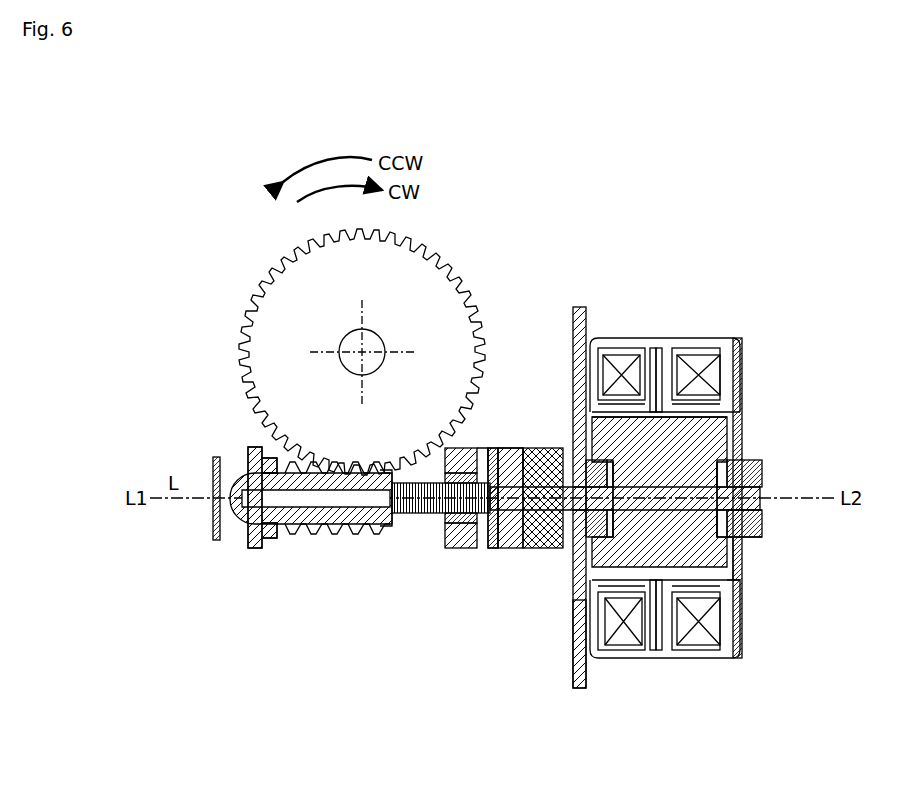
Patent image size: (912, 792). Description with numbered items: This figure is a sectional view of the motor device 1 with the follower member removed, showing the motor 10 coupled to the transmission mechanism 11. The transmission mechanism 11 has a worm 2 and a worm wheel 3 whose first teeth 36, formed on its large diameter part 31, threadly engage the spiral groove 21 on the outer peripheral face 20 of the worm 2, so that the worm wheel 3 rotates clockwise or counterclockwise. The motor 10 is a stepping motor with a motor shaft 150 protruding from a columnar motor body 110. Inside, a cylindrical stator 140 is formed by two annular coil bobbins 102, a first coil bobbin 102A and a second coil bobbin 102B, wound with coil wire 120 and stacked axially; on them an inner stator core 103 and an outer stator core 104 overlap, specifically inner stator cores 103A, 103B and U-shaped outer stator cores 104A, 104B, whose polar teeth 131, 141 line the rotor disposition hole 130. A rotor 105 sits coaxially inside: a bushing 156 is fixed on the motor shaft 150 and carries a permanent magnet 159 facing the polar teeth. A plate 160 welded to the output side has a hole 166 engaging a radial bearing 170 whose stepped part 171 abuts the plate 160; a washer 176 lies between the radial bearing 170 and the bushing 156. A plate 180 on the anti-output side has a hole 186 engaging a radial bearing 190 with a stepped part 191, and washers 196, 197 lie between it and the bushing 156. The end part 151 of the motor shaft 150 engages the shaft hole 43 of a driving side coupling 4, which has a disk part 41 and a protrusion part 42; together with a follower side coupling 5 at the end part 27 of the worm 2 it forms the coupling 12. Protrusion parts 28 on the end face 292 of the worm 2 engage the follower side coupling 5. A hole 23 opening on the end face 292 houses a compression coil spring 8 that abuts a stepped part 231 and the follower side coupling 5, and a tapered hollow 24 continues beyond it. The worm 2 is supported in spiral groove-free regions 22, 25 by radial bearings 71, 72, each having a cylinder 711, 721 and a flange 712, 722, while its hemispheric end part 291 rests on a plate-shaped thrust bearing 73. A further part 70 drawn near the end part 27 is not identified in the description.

The motor device 1 is at (682, 224).
The worm 2 is at (237, 462).
The worm wheel 3 is at (290, 344).
The driving side coupling 4 is at (543, 550).
The follower side coupling 5 is at (510, 550).
The compression coil spring 8 is at (383, 468).
The motor 10 is at (740, 328).
The transmission mechanism 11 is at (182, 330).
The coupling 12 is at (515, 723).
The outer peripheral face 20 is at (306, 455).
The spiral groove 21 is at (355, 532).
The spiral groove-free region 22 is at (412, 535).
The hole 23 is at (372, 532).
The hollow 24 is at (318, 532).
The spiral groove-free region 25 is at (238, 548).
The end part 27 is at (445, 535).
The protrusion parts 28 is at (461, 498).
The large diameter part 31 is at (452, 265).
The first teeth 36 is at (362, 352).
The disk part 41 is at (513, 455).
The protrusion part 42 is at (505, 455).
The shaft hole 43 is at (490, 455).
The holder 70 is at (480, 548).
The radial bearing 71 is at (430, 690).
The cylinder 711 is at (460, 540).
The flange 712 is at (478, 545).
The radial bearing 72 is at (300, 640).
The cylinder 721 is at (277, 540).
The flange 722 is at (260, 548).
The thrust bearing 73 is at (217, 540).
The coil bobbins 102 is at (690, 648).
The first coil bobbin 102A is at (622, 500).
The second coil bobbin 102B is at (698, 500).
The inner stator core 103 is at (665, 650).
The inner stator core 103A is at (653, 499).
The inner stator core 103B is at (659, 499).
The outer stator core 104 is at (740, 615).
The outer stator core 104A is at (621, 495).
The outer stator core 104B is at (696, 495).
The rotor 105 is at (730, 425).
The motor body 110 is at (743, 294).
The coil wire 120 is at (722, 635).
The rotor disposition hole 130 is at (687, 567).
The polar teeth 131 is at (551, 567).
The stator 140 is at (584, 650).
The polar teeth 141 is at (600, 570).
The motor shaft 150 is at (494, 455).
The end part 151 is at (493, 550).
The bushing 156 is at (728, 540).
The permanent magnet 159 is at (740, 590).
The plate 160 is at (573, 322).
The hole 166 is at (576, 478).
The radial bearing 170 is at (592, 460).
The stepped part 171 is at (584, 470).
The washer 176 is at (612, 462).
The plate 180 is at (741, 352).
The hole 186 is at (740, 470).
The radial bearing 190 is at (755, 482).
The stepped part 191 is at (758, 465).
The washer 196 is at (752, 525).
The washer 197 is at (755, 512).
The stepped part 231 is at (362, 470).
The end part 291 is at (213, 500).
The end face 292 is at (450, 455).